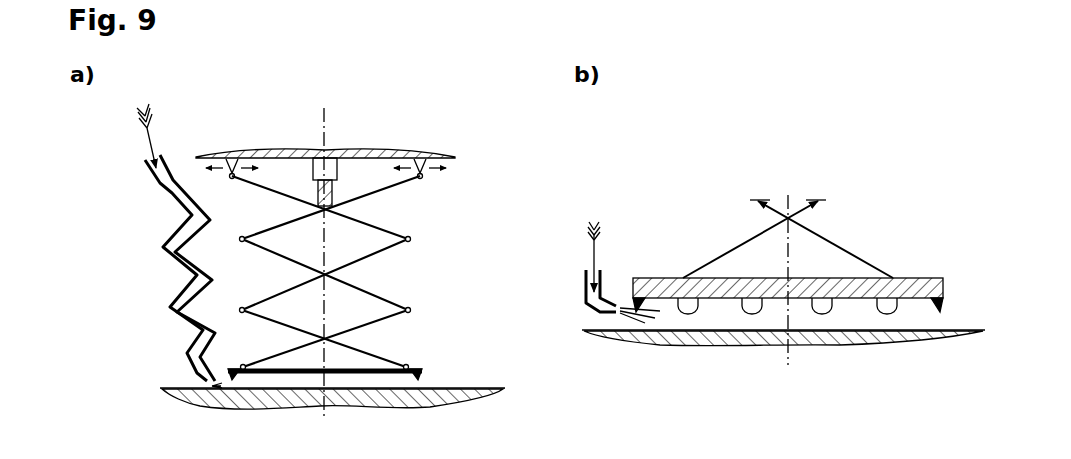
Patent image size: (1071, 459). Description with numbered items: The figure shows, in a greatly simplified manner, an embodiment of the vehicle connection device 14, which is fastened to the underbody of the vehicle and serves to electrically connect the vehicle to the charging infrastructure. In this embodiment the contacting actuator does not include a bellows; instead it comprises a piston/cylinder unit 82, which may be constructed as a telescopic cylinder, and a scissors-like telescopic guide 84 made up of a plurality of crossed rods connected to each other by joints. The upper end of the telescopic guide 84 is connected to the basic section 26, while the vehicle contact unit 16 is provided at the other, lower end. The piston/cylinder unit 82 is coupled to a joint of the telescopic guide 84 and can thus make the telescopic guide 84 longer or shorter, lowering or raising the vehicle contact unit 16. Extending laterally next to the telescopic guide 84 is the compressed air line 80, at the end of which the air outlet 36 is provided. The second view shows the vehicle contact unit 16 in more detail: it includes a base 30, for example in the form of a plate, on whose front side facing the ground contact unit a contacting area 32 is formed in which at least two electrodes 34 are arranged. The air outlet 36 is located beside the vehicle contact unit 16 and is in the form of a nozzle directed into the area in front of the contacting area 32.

In FIG. 9a, the vehicle connection device 14 is at (365, 149).
In FIG. 9a, the basic section 26 is at (314, 125).
In FIG. 9a, the piston/cylinder unit 82 is at (374, 149).
In FIG. 9a, the scissors-like telescopic guide 84 is at (389, 273).
In FIG. 9b, the scissors-like telescopic guide 84 is at (810, 218).
In FIG. 9a, the vehicle contact unit 16 is at (387, 348).
In FIG. 9a, the compressed air line 80 is at (145, 242).
In FIG. 9a, the air outlet 36 is at (200, 383).
In FIG. 9b, the air outlet 36 is at (654, 240).
In FIG. 9b, the base 30 is at (788, 235).
In FIG. 9b, the electrodes 34 is at (747, 343).
In FIG. 9b, the contacting area 32 is at (776, 348).